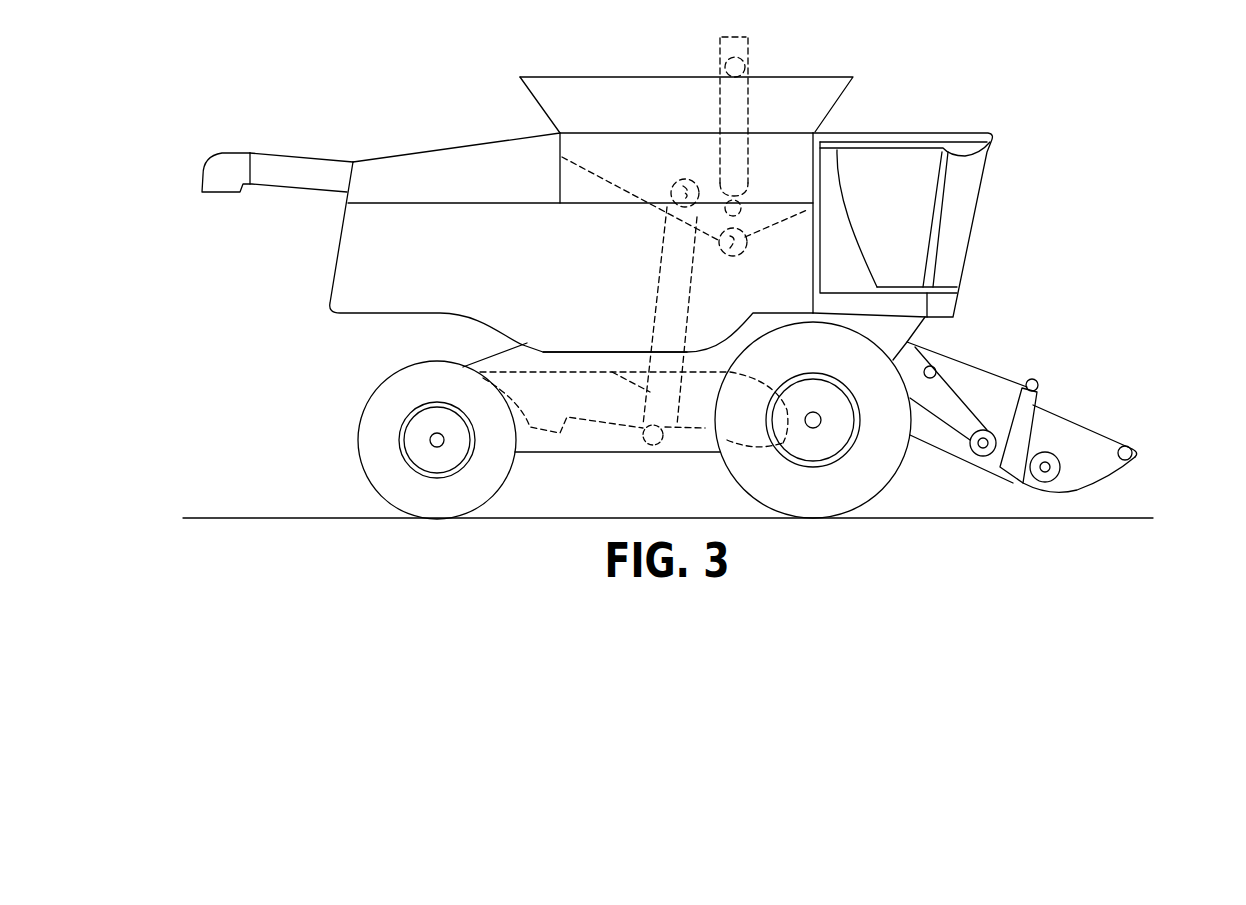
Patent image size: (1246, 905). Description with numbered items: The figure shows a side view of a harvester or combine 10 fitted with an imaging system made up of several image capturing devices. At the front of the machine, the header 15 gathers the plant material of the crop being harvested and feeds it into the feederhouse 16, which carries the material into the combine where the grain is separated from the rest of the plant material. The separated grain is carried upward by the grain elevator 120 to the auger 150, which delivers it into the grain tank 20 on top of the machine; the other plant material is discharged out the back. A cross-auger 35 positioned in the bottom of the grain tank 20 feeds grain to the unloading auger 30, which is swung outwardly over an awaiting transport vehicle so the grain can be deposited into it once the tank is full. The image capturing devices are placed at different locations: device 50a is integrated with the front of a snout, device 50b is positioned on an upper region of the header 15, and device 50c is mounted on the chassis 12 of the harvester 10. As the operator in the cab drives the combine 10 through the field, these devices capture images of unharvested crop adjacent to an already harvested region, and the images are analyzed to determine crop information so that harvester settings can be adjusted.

The harvester or combine 10 is at (1055, 43).
The chassis 12 is at (977, 220).
The header 15 is at (1080, 423).
The feederhouse 16 is at (965, 365).
The grain tank 20 is at (545, 77).
The unloading auger 30 is at (278, 152).
The cross-auger 35 is at (763, 250).
The image capturing device 50a is at (1137, 453).
The image capturing device 50b is at (1037, 372).
The image capturing device 50c is at (608, 456).
The grain elevator 120 is at (611, 352).
The auger 150 is at (717, 98).